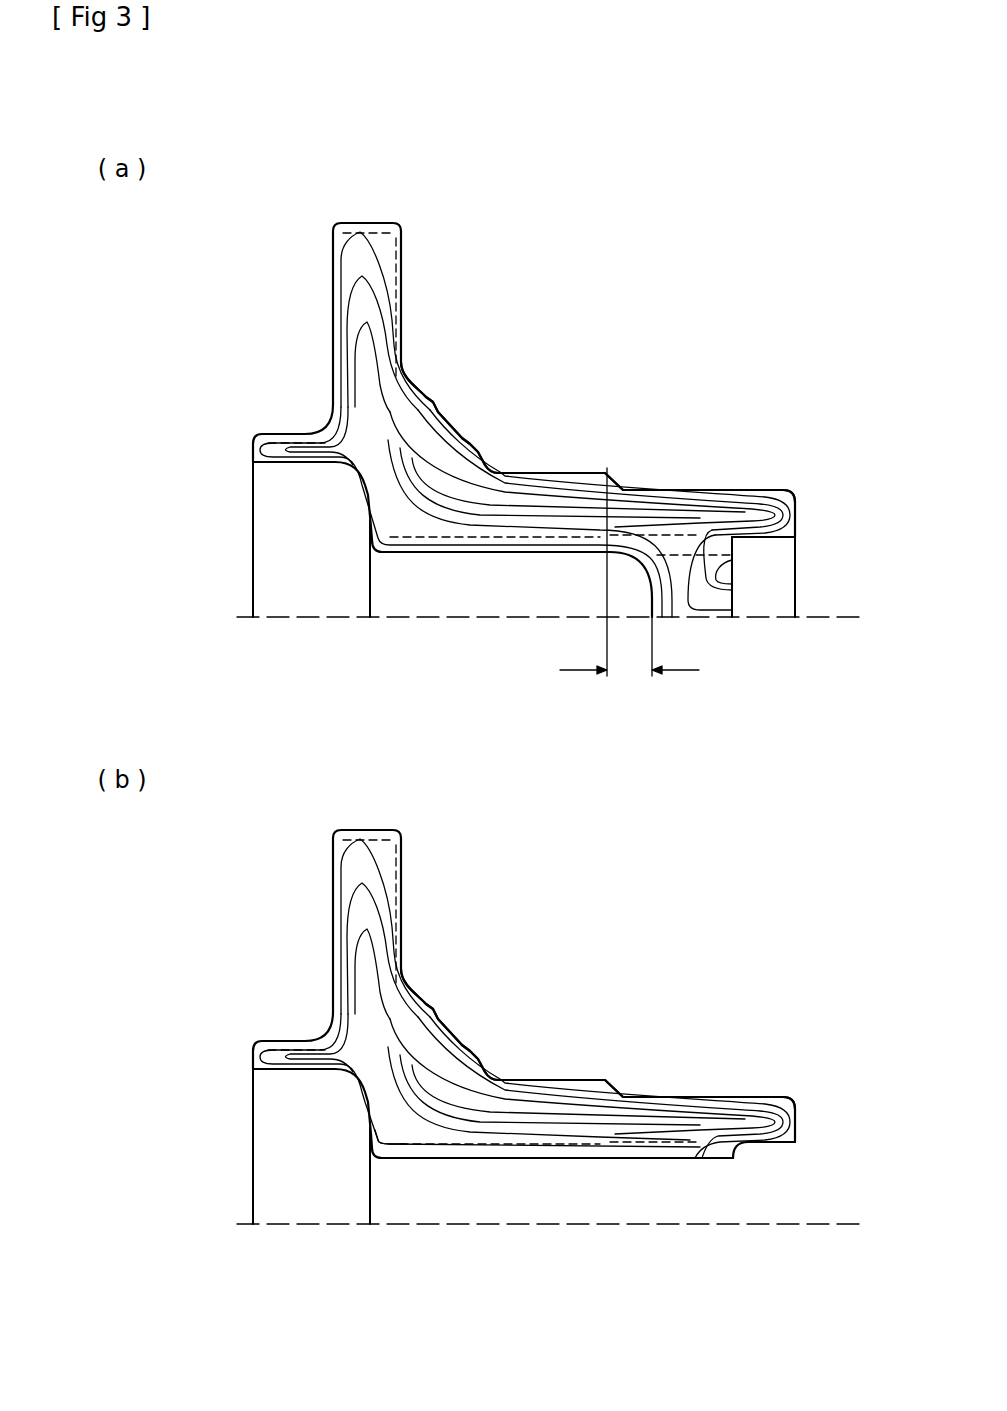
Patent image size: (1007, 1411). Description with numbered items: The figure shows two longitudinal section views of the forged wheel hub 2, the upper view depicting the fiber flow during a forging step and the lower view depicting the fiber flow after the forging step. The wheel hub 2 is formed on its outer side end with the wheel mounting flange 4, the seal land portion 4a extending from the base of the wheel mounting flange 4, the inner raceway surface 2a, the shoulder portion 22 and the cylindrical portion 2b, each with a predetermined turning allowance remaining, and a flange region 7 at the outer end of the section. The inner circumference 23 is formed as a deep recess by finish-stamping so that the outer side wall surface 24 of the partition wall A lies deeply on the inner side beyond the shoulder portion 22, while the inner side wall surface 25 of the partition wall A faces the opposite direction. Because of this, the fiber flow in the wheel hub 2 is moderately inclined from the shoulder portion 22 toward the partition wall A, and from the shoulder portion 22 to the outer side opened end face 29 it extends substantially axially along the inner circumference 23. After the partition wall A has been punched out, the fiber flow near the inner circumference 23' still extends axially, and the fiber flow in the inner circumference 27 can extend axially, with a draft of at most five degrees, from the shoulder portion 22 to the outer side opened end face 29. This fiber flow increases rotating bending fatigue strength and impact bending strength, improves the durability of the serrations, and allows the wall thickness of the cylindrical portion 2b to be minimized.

The wheel hub 2 is at (368, 477).
The inner raceway surface 2a is at (485, 467).
The cylindrical portion 2b is at (731, 493).
The wheel mounting flange 4 is at (358, 238).
The seal land portion 4a is at (444, 438).
The flange portion 7 is at (800, 515).
The shoulder portion 22 is at (626, 482).
The inner circumference 23 is at (527, 528).
The inner circumference 23' is at (557, 1134).
The outer side wall surface 24 is at (650, 602).
The inner side wall surface 25 is at (733, 597).
The inner circumference 27 is at (405, 1150).
The outer side opened end face 29 is at (368, 522).
The partition wall A is at (727, 575).